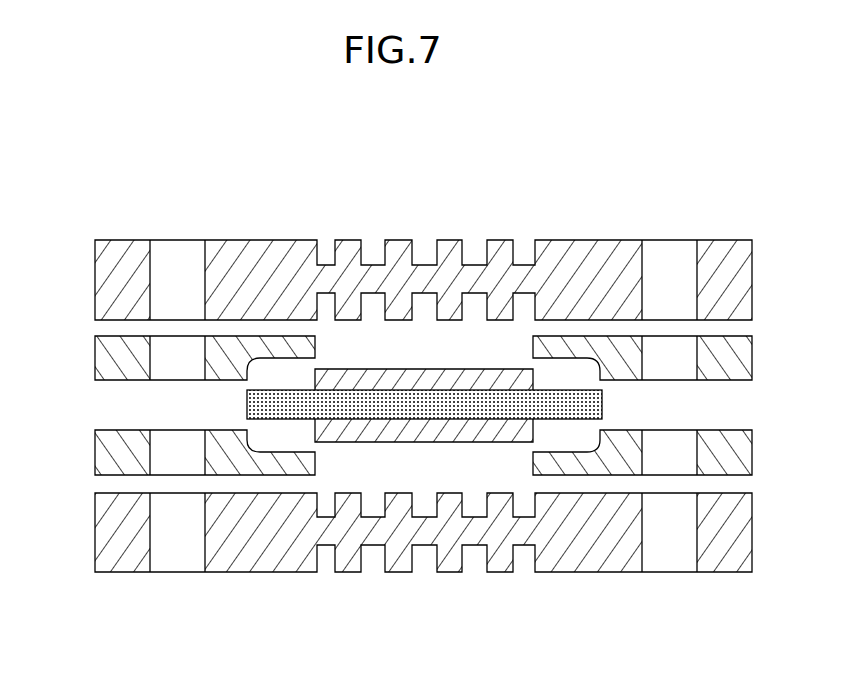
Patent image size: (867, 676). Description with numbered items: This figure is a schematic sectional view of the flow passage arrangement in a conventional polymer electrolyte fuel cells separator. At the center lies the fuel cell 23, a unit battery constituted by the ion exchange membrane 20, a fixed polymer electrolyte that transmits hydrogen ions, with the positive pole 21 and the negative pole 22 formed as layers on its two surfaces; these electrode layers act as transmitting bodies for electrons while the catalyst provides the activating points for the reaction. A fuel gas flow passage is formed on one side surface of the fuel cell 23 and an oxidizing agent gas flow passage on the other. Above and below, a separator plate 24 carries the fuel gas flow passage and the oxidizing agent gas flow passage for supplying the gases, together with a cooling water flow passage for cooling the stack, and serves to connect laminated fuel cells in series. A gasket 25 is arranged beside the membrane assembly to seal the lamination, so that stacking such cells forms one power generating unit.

The ion exchange membrane 20 is at (603, 403).
The positive pole 21 is at (355, 437).
The negative pole 22 is at (398, 383).
The fuel cell 23 is at (396, 289).
The separator plate 24 is at (452, 240).
The gasket 25 is at (100, 370).